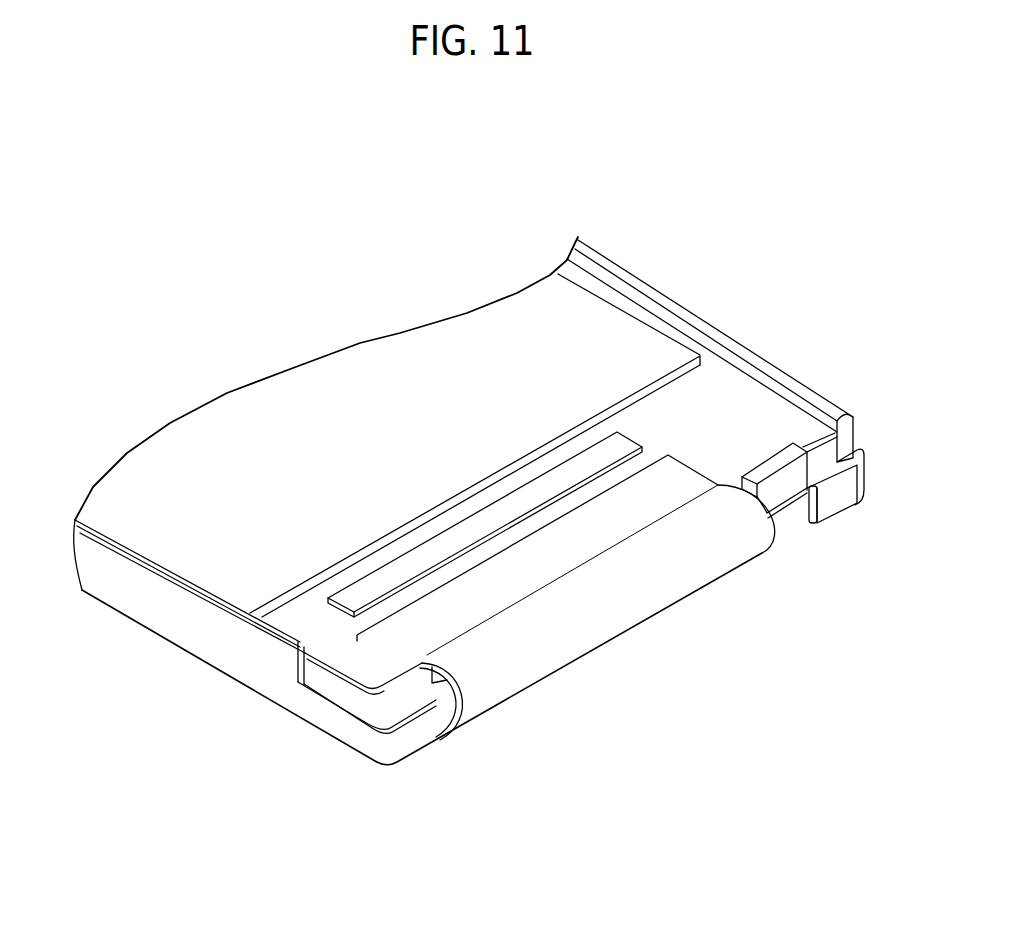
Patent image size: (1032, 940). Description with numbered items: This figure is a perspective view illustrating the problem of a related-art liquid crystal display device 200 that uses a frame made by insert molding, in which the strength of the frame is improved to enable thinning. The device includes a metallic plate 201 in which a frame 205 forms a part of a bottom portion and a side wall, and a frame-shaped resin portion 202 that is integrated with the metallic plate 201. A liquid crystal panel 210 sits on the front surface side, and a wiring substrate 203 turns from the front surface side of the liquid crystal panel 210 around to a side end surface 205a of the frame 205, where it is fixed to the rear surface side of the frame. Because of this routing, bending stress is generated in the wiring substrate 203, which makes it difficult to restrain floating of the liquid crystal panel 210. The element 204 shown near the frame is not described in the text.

The liquid crystal display device 200 is at (745, 225).
The metallic plate 201 is at (252, 675).
The frame-shaped resin portion 202 is at (405, 707).
The wiring substrate 203 is at (638, 612).
The end block 204 is at (842, 505).
The frame 205 is at (822, 347).
The side end surface 205a is at (783, 527).
The liquid crystal panel 210 is at (713, 397).